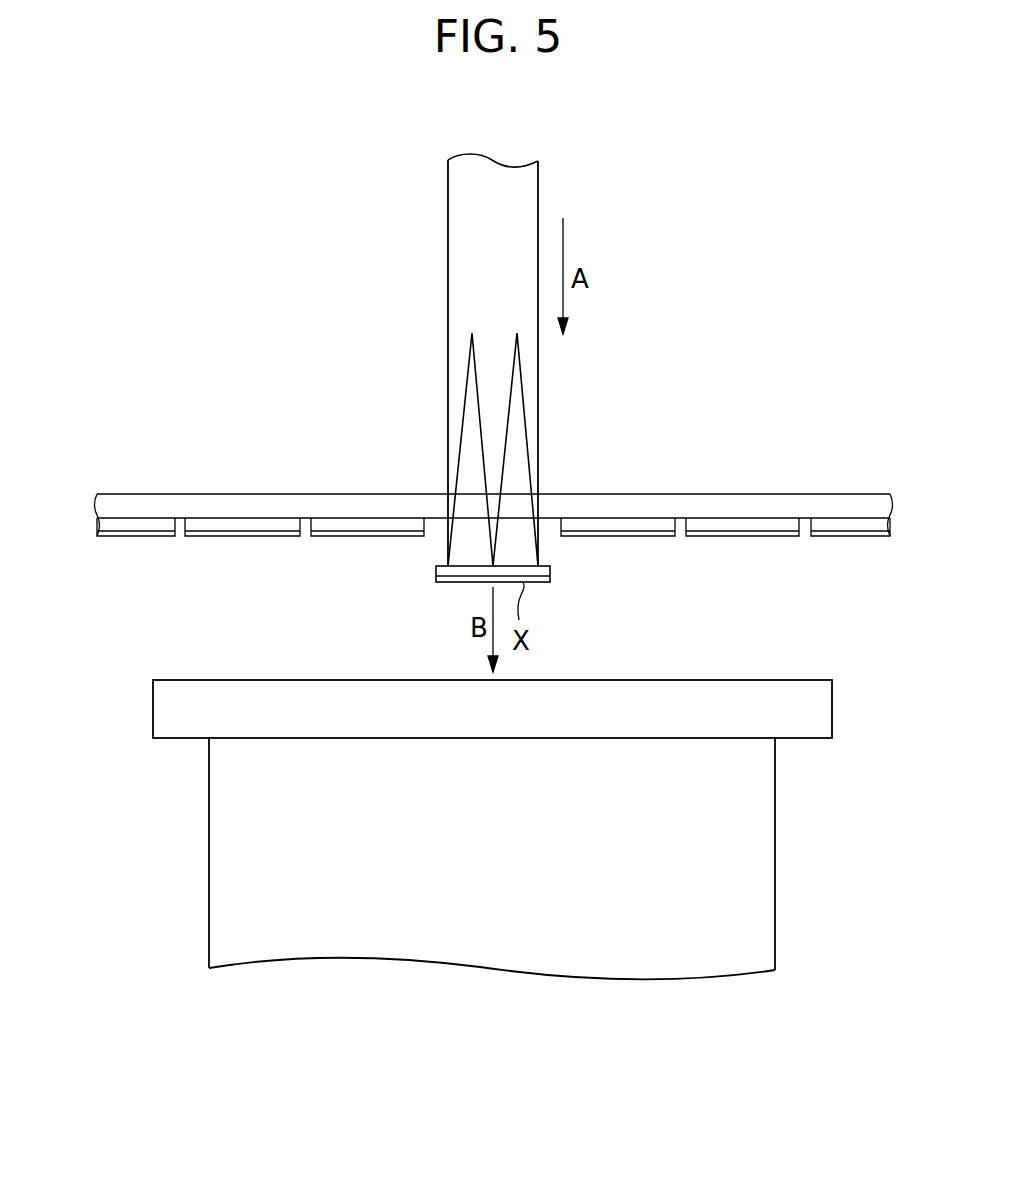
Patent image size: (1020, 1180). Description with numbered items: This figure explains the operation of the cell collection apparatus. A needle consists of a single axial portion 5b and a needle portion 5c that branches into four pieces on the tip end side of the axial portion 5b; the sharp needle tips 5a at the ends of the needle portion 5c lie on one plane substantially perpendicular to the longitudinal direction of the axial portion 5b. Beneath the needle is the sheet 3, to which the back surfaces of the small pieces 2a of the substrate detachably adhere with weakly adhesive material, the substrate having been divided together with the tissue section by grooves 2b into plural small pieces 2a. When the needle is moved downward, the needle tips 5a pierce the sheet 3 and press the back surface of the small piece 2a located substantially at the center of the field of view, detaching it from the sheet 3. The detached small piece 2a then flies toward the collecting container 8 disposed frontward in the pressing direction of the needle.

The axial portion 5b is at (448, 240).
The needle portion 5c is at (448, 385).
The needle tips 5a is at (447, 583).
The sheet 3 is at (221, 494).
The grooves 2b is at (305, 528).
The small piece 2a is at (552, 569).
The collecting container 8 is at (209, 815).